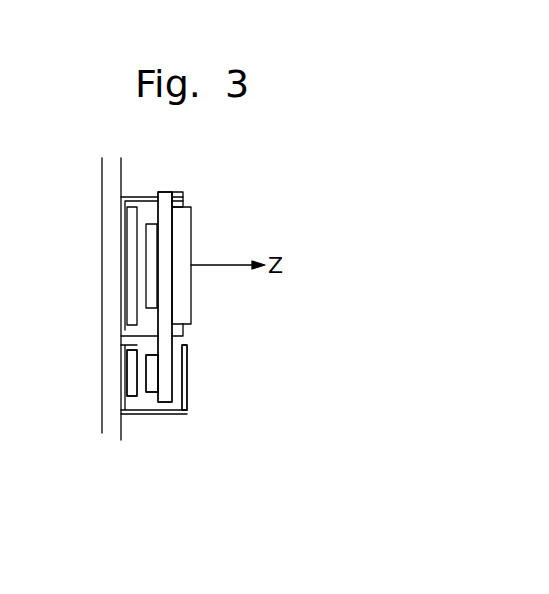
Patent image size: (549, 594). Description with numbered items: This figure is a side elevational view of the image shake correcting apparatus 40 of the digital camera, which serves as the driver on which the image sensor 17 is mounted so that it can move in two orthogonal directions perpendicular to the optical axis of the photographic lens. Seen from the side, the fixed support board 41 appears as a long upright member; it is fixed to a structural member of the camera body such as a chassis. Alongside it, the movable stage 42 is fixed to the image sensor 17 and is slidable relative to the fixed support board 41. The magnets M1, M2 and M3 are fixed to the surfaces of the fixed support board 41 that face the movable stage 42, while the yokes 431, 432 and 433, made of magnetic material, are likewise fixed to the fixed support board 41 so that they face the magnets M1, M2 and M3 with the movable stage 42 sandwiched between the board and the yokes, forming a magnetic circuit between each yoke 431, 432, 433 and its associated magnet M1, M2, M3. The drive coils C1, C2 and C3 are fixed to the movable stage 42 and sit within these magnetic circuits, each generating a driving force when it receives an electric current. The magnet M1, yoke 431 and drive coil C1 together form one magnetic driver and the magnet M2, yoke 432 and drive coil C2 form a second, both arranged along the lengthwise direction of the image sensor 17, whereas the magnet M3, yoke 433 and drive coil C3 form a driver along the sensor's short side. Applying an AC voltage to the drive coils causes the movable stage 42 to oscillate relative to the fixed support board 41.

The image shake correcting apparatus 40 is at (302, 520).
The fixed support board 41 is at (106, 433).
The movable stage 42 is at (168, 393).
The magnet M3 is at (127, 197).
The drive coil C3 is at (148, 224).
The yoke 433 is at (178, 192).
The image sensor 17 is at (182, 222).
The magnet M1 is at (133, 396).
The magnet M2 is at (122, 437).
The drive coil C1 is at (153, 391).
The drive coil C2 is at (173, 440).
The yoke 431 is at (183, 414).
The yoke 432 is at (223, 435).